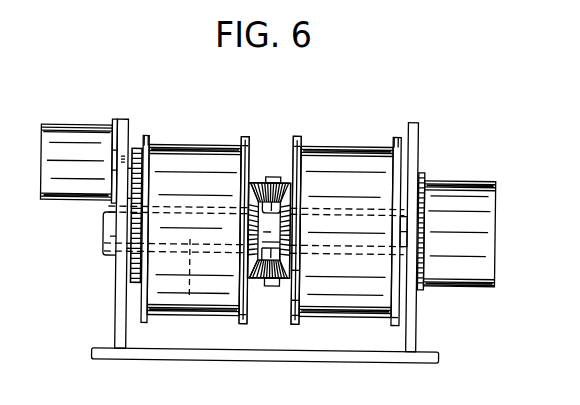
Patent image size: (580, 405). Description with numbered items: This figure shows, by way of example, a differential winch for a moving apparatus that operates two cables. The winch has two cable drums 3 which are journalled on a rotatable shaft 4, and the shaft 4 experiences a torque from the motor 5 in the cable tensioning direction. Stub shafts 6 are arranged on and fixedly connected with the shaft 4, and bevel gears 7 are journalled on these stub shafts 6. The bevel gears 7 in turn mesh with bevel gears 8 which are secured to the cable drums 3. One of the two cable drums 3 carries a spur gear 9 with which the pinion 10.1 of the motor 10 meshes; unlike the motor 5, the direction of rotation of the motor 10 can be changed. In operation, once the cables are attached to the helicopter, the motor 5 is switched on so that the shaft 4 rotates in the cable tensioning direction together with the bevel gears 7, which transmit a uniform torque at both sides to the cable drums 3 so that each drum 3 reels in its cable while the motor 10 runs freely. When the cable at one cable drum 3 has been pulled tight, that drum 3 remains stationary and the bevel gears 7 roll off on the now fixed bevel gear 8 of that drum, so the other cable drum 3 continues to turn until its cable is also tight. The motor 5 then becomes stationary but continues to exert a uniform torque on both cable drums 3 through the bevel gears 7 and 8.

The cable drums 3 is at (197, 164).
The shaft 4 is at (189, 326).
The motor 5 is at (467, 206).
The stub shafts 6 is at (299, 288).
The bevel gears 7 is at (252, 188).
The bevel gears 8 is at (296, 207).
The spur gear 9 is at (127, 289).
The motor 10 is at (66, 148).
The pinion 10.1 is at (138, 150).